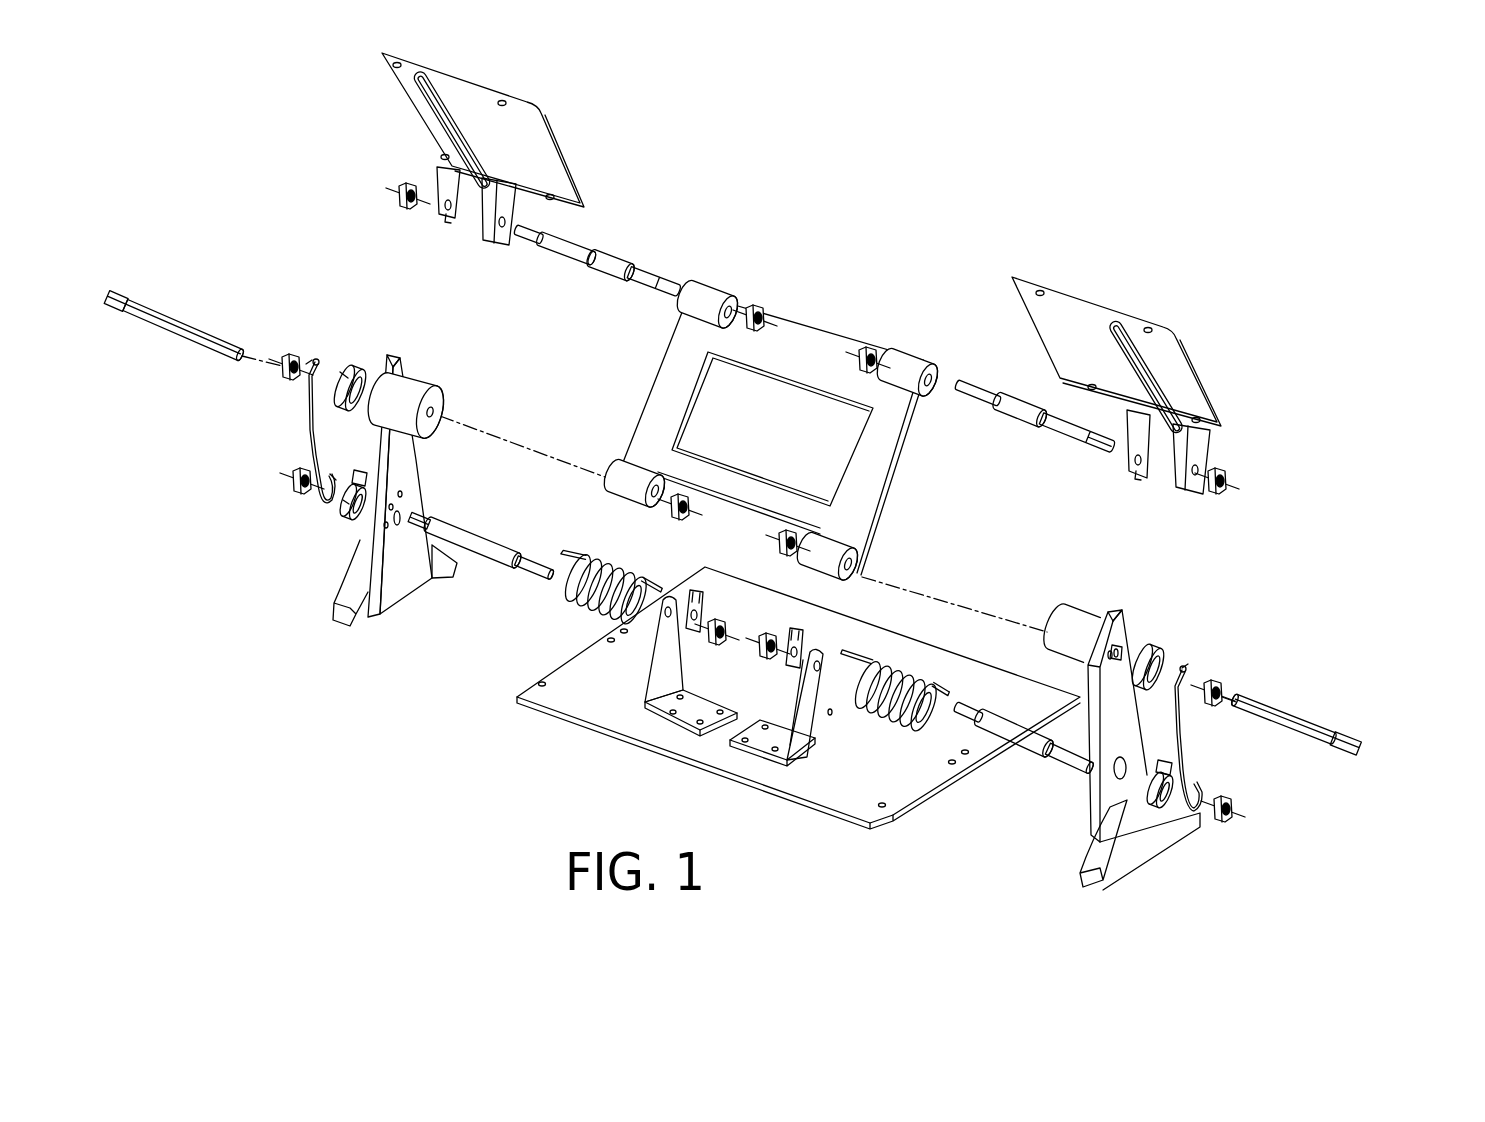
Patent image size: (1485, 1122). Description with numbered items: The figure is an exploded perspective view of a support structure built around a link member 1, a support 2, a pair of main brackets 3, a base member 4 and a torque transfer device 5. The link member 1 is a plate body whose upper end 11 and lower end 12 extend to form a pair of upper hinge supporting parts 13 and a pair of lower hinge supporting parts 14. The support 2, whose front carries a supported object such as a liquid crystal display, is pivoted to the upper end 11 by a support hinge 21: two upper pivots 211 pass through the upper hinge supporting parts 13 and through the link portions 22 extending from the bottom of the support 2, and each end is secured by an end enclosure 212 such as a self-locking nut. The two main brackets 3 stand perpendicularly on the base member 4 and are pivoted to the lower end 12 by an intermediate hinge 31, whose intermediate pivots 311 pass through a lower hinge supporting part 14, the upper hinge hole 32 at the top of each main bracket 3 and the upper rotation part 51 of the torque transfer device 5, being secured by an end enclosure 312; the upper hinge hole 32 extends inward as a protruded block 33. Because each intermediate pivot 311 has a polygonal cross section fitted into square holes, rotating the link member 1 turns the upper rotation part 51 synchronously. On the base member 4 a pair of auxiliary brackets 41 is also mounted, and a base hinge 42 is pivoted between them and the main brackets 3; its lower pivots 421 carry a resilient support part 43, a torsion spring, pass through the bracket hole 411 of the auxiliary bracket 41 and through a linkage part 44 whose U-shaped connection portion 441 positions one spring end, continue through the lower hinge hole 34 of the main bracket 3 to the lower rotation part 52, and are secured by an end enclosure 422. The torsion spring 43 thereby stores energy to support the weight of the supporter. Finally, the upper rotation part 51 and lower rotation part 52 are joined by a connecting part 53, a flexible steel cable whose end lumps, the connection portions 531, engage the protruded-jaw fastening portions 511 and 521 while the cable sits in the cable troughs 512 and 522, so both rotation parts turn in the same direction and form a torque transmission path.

The link member 1 is at (741, 390).
The upper end 11 is at (807, 348).
The lower end 12 is at (632, 503).
The upper hinge supporting part 13 is at (703, 290).
The lower hinge supporting part 14 is at (870, 578).
The support 2 is at (540, 150).
The support hinge 21 is at (967, 378).
The upper pivot 211 is at (1022, 408).
The end enclosure 212 is at (866, 348).
The link portion 22 is at (1140, 474).
The main bracket 3 is at (766, 622).
The intermediate hinge 31 is at (186, 320).
The intermediate pivot 311 is at (1300, 725).
The end enclosure 312 is at (291, 356).
The upper hinge hole 32 is at (438, 413).
The protruded block 33 is at (1077, 630).
The lower hinge hole 34 is at (1114, 780).
The base member 4 is at (767, 773).
The auxiliary bracket 41 is at (820, 722).
The bracket hole 411 is at (833, 714).
The base hinge 42 is at (993, 716).
The lower pivot 421 is at (1023, 743).
The end enclosure 422 is at (766, 651).
The resilient support part 43 is at (890, 668).
The linkage part 44 is at (784, 646).
The connection portion 441 is at (733, 733).
The torque transfer device 5 is at (767, 559).
The upper rotation part 51 is at (318, 414).
The fastening portion 511 is at (352, 376).
The cable trough 512 is at (348, 376).
The lower rotation part 52 is at (360, 521).
The fastening portion 521 is at (334, 482).
The cable trough 522 is at (344, 503).
The connecting part 53 is at (302, 370).
The connection portion 531 is at (1188, 668).